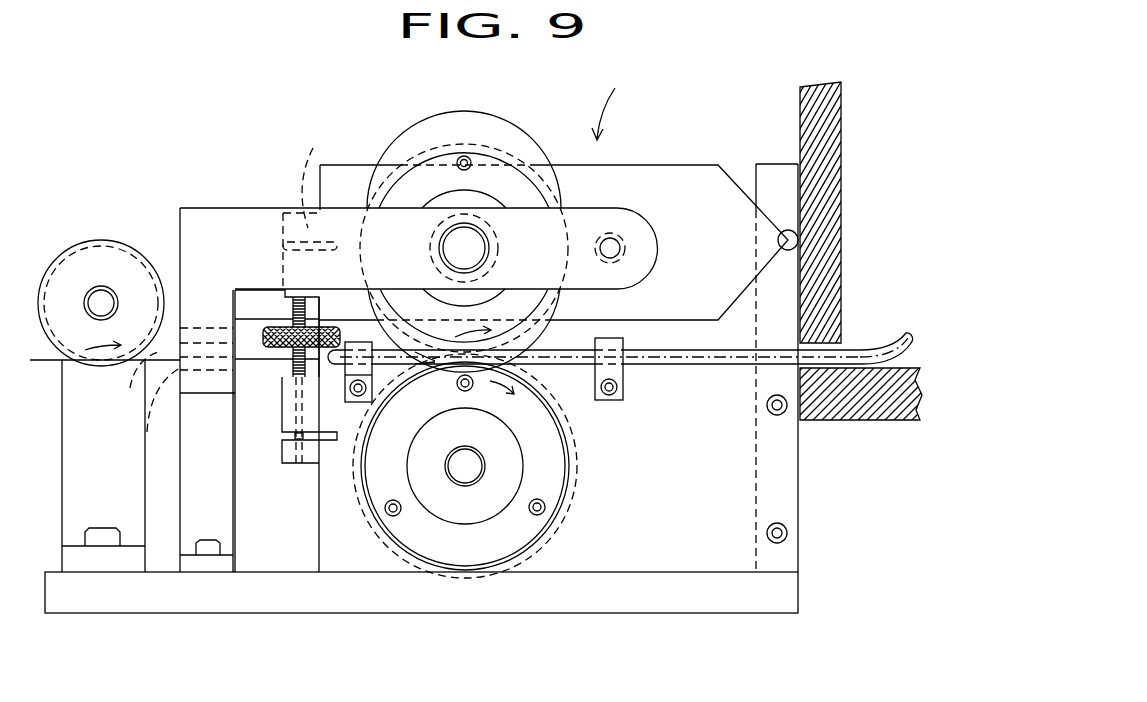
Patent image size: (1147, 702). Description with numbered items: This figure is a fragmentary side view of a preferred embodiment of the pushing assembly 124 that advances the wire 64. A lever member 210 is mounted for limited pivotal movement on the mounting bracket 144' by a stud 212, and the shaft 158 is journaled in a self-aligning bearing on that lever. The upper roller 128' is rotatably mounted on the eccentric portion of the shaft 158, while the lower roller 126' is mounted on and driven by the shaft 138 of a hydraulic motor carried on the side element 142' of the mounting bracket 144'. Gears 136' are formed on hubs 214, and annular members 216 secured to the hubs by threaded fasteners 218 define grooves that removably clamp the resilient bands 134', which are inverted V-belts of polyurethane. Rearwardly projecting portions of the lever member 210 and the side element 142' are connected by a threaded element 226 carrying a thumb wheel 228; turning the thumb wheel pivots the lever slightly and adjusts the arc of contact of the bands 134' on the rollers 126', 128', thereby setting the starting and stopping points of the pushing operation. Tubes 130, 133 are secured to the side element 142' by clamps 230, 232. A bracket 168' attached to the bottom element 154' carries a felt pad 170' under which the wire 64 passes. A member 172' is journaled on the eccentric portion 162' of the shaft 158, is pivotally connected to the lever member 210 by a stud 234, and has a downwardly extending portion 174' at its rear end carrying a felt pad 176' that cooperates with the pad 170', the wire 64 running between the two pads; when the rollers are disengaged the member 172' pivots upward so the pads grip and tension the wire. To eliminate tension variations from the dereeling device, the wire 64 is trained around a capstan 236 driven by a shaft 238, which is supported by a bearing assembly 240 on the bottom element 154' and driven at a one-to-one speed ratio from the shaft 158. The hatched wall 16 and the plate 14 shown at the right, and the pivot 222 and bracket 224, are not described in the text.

The workpiece support plate 14 is at (862, 420).
The machine wall 16 is at (843, 102).
The wire 64 is at (45, 362).
The pushing assembly 124 is at (603, 99).
The roller 126' is at (465, 466).
The roller 128' is at (464, 247).
The tube 130 is at (872, 340).
The tube 133 is at (397, 370).
The resilient band 134' is at (499, 324).
The gear 136' is at (499, 319).
The shaft 138 is at (462, 450).
The side element 142' is at (730, 404).
The mounting bracket 144' is at (776, 340).
The bottom element 154' is at (421, 610).
The shaft 158 is at (430, 227).
The eccentric portion 162' is at (495, 248).
The bracket 168' is at (270, 431).
The felt pad 170' is at (133, 400).
The member 172' is at (419, 215).
The downwardly extending portion 174' is at (176, 390).
The felt pad 176' is at (124, 398).
The lever member 210 is at (643, 165).
The stud 212 is at (772, 242).
The hub 214 is at (503, 455).
The annular member 216 is at (520, 187).
The threaded fastener 218 is at (461, 158).
The arm pivot 222 is at (318, 207).
The adjusting bracket 224 is at (293, 413).
The threaded element 226 is at (293, 313).
The thumb wheel 228 is at (265, 323).
The clamp 230 is at (623, 378).
The clamp 232 is at (371, 376).
The stud 234 is at (630, 246).
The capstan 236 is at (70, 268).
The shaft 238 is at (102, 286).
The bearing assembly 240 is at (127, 492).